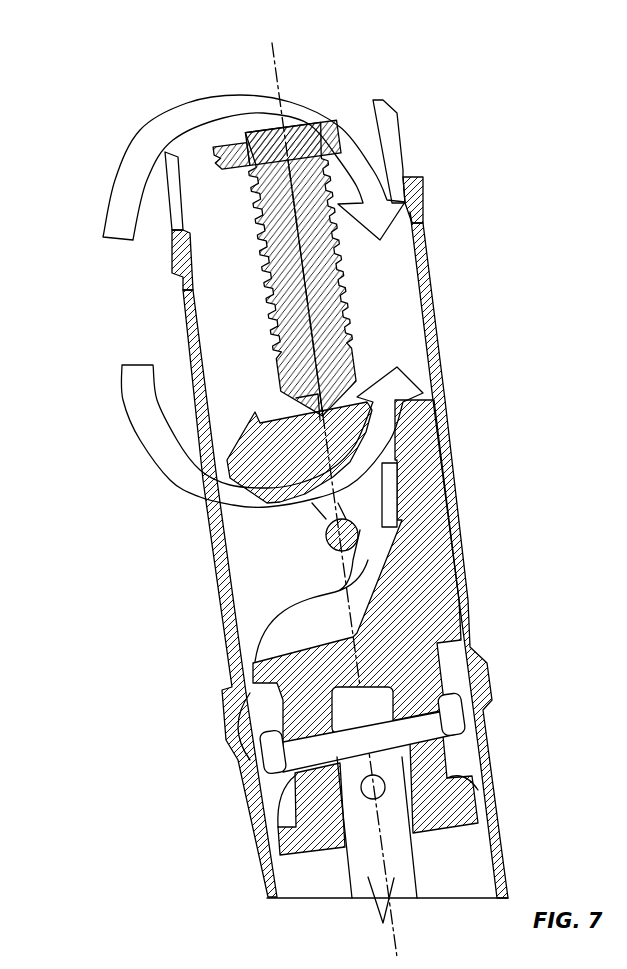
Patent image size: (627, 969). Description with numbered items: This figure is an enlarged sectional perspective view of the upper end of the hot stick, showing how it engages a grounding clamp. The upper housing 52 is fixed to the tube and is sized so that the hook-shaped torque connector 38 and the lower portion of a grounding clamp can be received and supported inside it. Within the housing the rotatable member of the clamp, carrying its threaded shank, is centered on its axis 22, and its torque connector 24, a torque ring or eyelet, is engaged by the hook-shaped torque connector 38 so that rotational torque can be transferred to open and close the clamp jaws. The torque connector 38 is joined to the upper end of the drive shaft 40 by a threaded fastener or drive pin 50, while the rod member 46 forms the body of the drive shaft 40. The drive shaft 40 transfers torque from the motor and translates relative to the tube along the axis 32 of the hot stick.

The axis 22 is at (278, 83).
The upper housing 52 is at (430, 190).
The hook-shaped torque connector 38 is at (440, 597).
The torque connector 24 is at (328, 545).
The drive pin 50 is at (427, 723).
The rod member 46 is at (368, 868).
The drive shaft 40 is at (410, 905).
The axis 32 is at (399, 948).